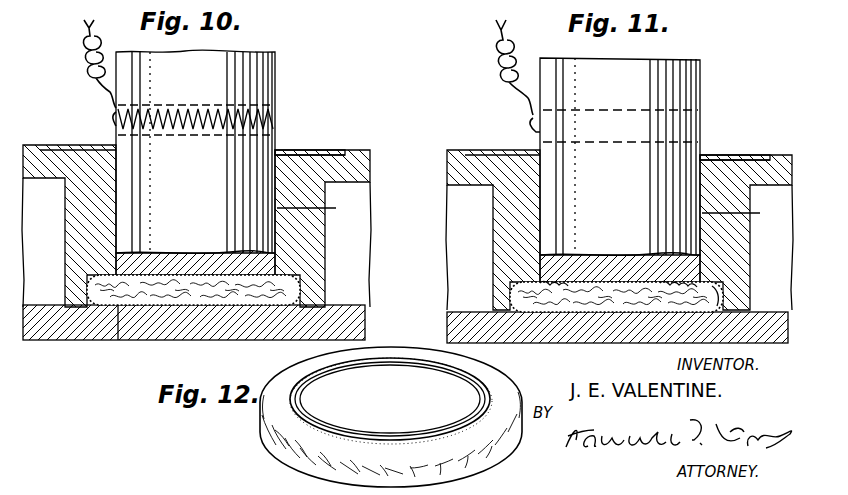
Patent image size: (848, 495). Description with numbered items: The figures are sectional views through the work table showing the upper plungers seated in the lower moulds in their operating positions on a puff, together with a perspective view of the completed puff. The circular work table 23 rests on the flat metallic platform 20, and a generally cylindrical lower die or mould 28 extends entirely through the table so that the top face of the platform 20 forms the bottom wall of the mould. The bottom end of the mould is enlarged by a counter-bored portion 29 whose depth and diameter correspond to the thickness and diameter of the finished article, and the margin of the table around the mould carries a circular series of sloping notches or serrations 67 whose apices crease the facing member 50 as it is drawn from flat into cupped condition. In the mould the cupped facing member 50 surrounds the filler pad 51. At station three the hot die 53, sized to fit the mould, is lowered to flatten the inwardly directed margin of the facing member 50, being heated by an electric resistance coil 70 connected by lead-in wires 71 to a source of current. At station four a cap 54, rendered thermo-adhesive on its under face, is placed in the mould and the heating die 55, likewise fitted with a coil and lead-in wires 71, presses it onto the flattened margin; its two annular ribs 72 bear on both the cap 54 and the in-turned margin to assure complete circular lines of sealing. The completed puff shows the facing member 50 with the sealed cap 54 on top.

In FIG. 10, the platform 20 is at (50, 336).
In FIG. 11, the platform 20 is at (515, 342).
In FIG. 10, the work table 23 is at (368, 172).
In FIG. 11, the work table 23 is at (447, 168).
In FIG. 10, the lower die or mould 28 is at (316, 210).
In FIG. 11, the lower die or mould 28 is at (743, 220).
In FIG. 10, the counter-bored portion 29 is at (285, 272).
In FIG. 11, the counter-bored portion 29 is at (515, 286).
In FIG. 10, the facing member 50 is at (118, 312).
In FIG. 11, the facing member 50 is at (555, 306).
In FIG. 12, the facing member 50 is at (270, 440).
In FIG. 11, the filler pad 51 is at (718, 300).
In FIG. 10, the die 53 is at (280, 71).
In FIG. 11, the cap 54 is at (592, 279).
In FIG. 12, the cap 54 is at (392, 375).
In FIG. 11, the heating die 55 is at (704, 78).
In FIG. 10, the notches or serrations 67 is at (283, 155).
In FIG. 11, the notches or serrations 67 is at (707, 162).
In FIG. 10, the electric resistance coil 70 is at (172, 100).
In FIG. 11, the electric resistance coil 70 is at (602, 118).
In FIG. 10, the lead-in wires 71 is at (85, 45).
In FIG. 11, the lead-in wires 71 is at (500, 66).
In FIG. 11, the annular ribs 72 is at (675, 279).